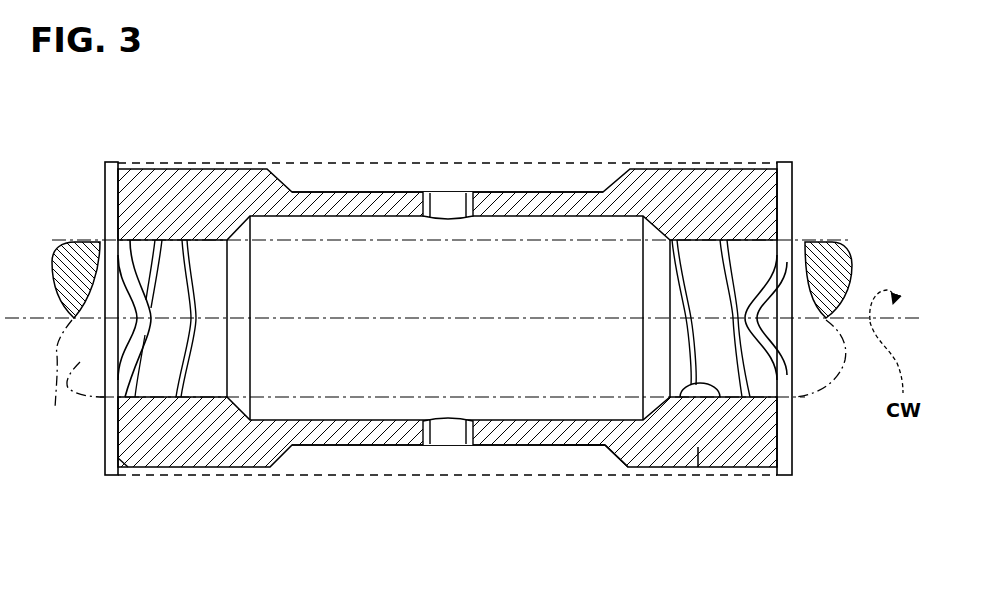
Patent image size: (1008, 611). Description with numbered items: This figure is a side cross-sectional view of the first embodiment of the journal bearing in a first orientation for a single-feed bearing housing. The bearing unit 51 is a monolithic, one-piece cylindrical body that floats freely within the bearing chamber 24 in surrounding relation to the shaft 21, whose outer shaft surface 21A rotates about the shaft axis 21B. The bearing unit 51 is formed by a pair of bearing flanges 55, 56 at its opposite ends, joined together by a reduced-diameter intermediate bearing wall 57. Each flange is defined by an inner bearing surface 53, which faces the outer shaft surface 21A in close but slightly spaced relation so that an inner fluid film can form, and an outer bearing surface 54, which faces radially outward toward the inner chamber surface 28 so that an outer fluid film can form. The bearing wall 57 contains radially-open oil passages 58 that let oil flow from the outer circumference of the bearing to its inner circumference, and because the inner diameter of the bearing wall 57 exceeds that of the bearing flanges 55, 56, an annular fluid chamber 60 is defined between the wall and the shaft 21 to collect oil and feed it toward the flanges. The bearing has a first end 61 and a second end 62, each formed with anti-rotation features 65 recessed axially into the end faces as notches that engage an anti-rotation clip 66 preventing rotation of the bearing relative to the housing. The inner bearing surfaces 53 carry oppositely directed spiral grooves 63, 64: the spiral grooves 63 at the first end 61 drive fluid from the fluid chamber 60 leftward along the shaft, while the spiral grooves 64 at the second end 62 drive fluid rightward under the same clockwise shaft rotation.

The shaft 21 is at (444, 378).
The outer shaft surface 21A is at (97, 397).
The shaft axis 21B is at (22, 318).
The bearing chamber 24 is at (566, 227).
The inner chamber surface 28 is at (483, 163).
The bearing unit 51 is at (327, 450).
The inner bearing surface 53 is at (178, 257).
The outer bearing surface 54 is at (688, 168).
The bearing flange 55 is at (139, 458).
The bearing flange 56 is at (698, 448).
The intermediate bearing wall 57 is at (572, 440).
The oil passage 58 is at (445, 205).
The annular fluid chamber 60 is at (593, 457).
The first end 61 is at (138, 146).
The second end 62 is at (776, 106).
The spiral groove 63 is at (196, 308).
The spiral groove 64 is at (657, 243).
The anti-rotation feature 65 is at (148, 258).
The anti-rotation clip 66 is at (103, 193).